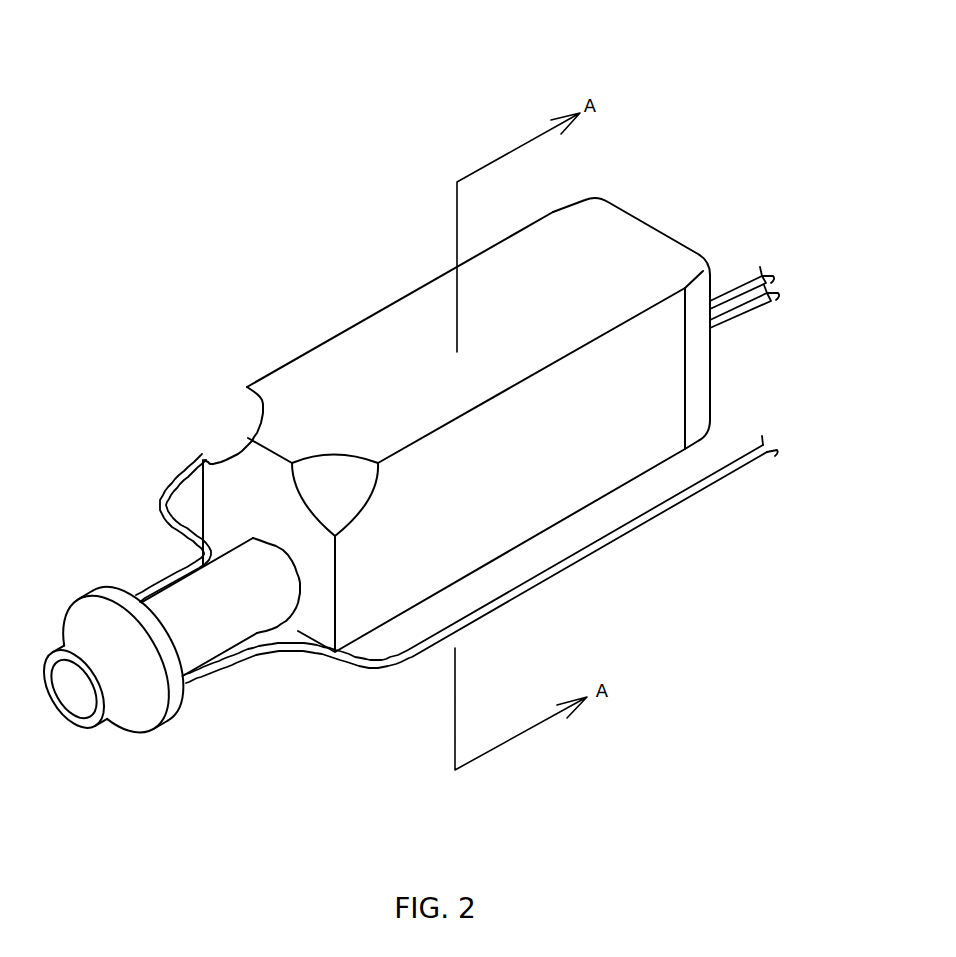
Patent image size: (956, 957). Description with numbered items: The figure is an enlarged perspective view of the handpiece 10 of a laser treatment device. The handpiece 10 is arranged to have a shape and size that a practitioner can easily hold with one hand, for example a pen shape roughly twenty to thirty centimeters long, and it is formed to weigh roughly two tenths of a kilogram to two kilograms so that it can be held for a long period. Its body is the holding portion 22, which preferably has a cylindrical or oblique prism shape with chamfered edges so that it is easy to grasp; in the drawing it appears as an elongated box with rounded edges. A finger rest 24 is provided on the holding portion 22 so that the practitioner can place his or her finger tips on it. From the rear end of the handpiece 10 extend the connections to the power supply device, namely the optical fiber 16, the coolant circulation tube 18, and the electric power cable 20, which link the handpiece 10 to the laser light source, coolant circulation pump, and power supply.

The handpiece 10 is at (395, 152).
The holding portion 22 is at (432, 397).
The finger rest 24 is at (233, 396).
The coolant circulation tube 18 is at (447, 563).
The electric power cable 20 is at (742, 241).
The optical fiber 16 is at (678, 323).